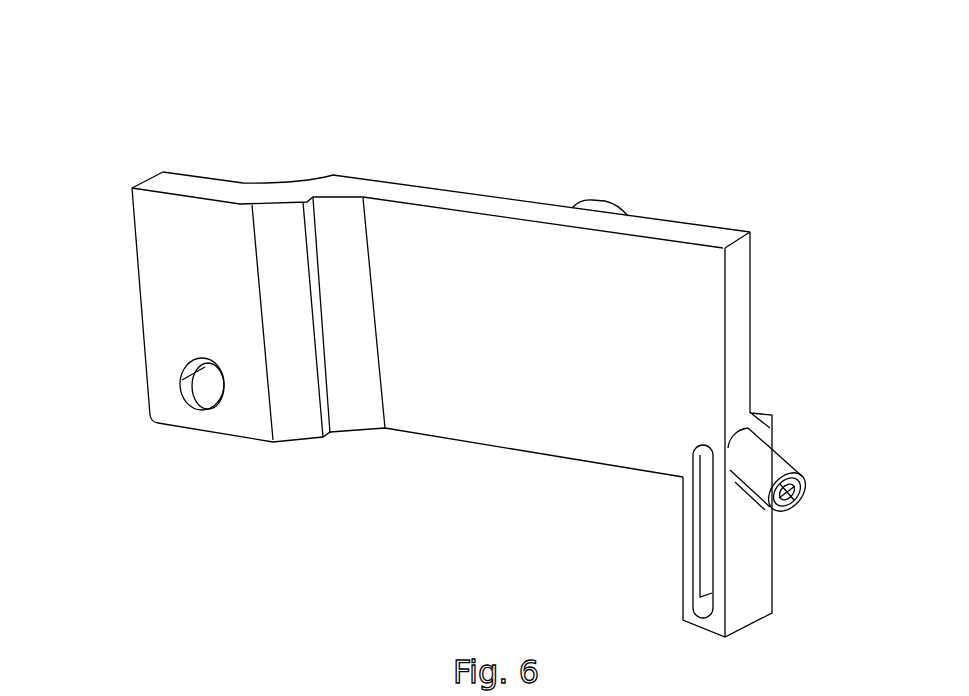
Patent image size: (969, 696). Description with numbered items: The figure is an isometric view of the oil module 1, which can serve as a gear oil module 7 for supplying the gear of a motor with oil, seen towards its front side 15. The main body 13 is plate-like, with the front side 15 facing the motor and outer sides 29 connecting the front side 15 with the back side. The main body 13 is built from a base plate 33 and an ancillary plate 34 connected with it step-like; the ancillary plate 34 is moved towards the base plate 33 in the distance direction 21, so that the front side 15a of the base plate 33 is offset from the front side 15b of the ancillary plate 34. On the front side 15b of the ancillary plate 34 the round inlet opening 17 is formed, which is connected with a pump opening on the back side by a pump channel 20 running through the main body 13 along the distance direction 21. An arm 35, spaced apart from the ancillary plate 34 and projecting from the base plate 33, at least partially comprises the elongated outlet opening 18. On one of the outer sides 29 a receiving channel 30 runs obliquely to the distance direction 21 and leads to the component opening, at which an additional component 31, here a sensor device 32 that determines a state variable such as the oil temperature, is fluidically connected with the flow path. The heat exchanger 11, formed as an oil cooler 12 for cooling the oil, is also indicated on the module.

The oil module 1 is at (468, 325).
The gear oil module 7 is at (468, 330).
The heat exchanger 11 is at (631, 168).
The oil cooler 12 is at (614, 197).
The main body 13 is at (369, 154).
The front side 15 is at (468, 349).
The front side of the base plate 15a is at (768, 434).
The front side of the ancillary plate 15b is at (142, 353).
The inlet opening 17 is at (207, 400).
The outlet opening 18 is at (707, 578).
The pump channel 20 is at (181, 402).
The distance direction 21 is at (518, 125).
The outer sides 29 is at (467, 203).
The receiving channel 30 is at (826, 476).
The additional component 31 is at (846, 509).
The sensor device 32 is at (807, 498).
The base plate 33 is at (206, 316).
The ancillary plate 34 is at (622, 228).
The arm 35 is at (768, 580).